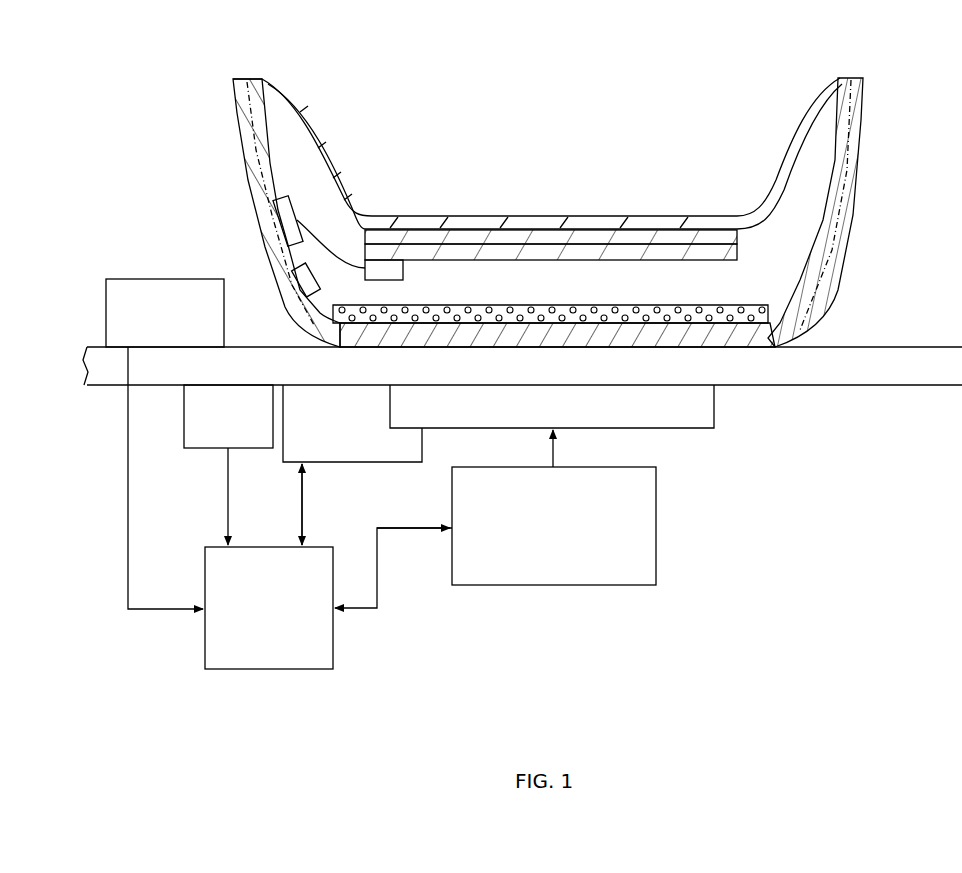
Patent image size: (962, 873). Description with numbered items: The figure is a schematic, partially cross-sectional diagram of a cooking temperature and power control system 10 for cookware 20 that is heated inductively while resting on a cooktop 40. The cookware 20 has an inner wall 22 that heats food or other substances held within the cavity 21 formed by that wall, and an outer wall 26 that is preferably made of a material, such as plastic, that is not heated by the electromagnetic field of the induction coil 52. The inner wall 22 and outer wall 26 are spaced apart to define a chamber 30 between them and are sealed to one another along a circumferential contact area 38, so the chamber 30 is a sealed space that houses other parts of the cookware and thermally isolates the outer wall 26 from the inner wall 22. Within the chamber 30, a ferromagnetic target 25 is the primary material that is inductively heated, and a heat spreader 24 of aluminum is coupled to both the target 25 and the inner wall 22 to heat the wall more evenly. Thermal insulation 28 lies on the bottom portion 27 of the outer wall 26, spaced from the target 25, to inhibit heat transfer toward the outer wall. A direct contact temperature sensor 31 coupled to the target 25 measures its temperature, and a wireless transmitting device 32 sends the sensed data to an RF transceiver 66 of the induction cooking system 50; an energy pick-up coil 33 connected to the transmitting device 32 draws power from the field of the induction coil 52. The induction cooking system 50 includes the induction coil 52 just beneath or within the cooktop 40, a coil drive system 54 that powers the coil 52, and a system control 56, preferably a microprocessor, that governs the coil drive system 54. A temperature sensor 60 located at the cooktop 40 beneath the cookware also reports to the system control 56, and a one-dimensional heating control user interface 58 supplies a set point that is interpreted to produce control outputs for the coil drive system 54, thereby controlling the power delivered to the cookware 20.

The cooking temperature and power control system 10 is at (412, 66).
The cookware 20 is at (774, 113).
The cavity 21 is at (666, 203).
The inner wall 22 is at (456, 216).
The heat spreader 24 is at (533, 237).
The target 25 is at (563, 252).
The outer wall 26 is at (236, 108).
The bottom portion 27 is at (733, 333).
The thermal insulation 28 is at (728, 308).
The chamber 30 is at (281, 118).
The temperature sensor 31 is at (392, 268).
The wireless transmitting device 32 is at (278, 218).
The coil 33 is at (298, 282).
The circumferential contact area 38 is at (245, 78).
The cooktop 40 is at (910, 358).
The induction cooking system 50 is at (658, 668).
The induction coil 52 is at (698, 428).
The coil drive system 54 is at (632, 585).
The system control 56 is at (305, 669).
The heating control user interface 58 is at (128, 279).
The temperature sensor 60 is at (207, 448).
The RF transceiver 66 is at (373, 462).